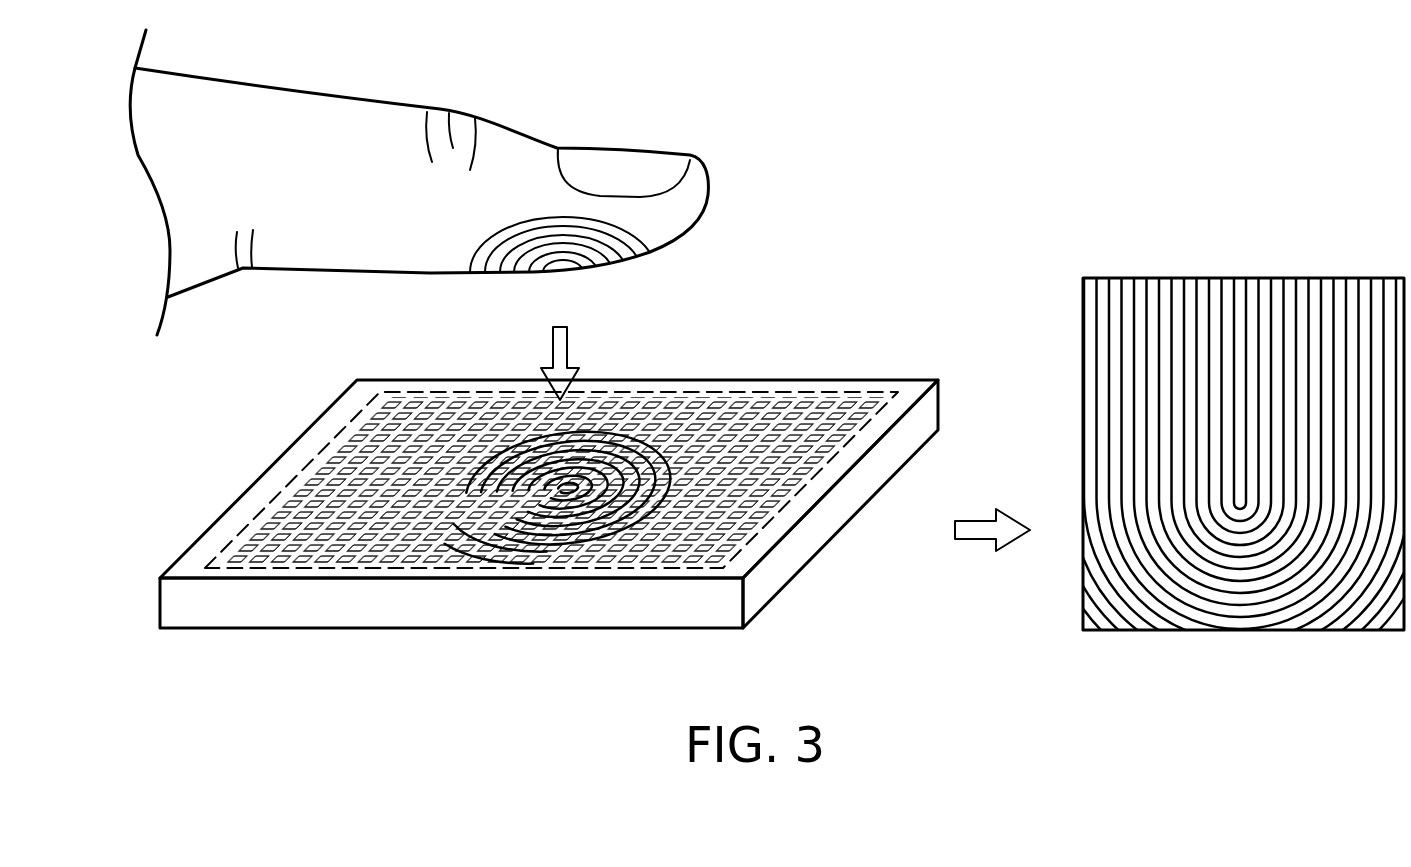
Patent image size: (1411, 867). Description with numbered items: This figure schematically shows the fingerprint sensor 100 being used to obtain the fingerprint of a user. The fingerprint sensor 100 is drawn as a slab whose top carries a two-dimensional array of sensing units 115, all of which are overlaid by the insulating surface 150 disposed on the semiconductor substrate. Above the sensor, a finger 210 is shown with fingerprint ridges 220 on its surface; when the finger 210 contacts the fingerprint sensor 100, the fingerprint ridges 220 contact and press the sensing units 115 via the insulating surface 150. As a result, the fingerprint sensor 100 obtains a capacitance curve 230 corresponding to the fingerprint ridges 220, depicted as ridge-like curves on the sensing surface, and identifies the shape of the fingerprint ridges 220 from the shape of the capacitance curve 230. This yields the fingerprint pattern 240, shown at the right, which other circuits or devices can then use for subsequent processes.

The fingerprint sensor 100 is at (908, 375).
The sensing units 115 is at (233, 555).
The insulating surface 150 is at (762, 390).
The finger 210 is at (712, 146).
The fingerprint ridges 220 is at (617, 253).
The capacitance curve 230 is at (548, 477).
The fingerprint pattern 240 is at (1243, 258).